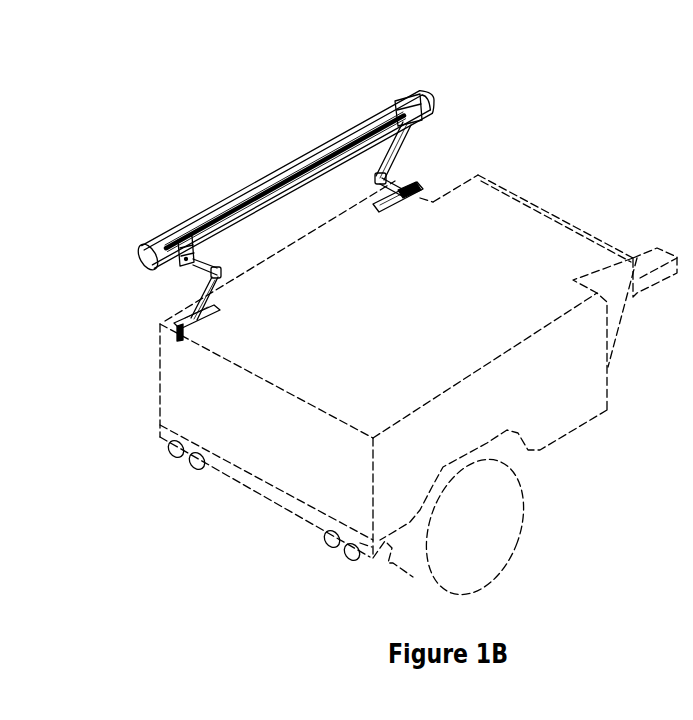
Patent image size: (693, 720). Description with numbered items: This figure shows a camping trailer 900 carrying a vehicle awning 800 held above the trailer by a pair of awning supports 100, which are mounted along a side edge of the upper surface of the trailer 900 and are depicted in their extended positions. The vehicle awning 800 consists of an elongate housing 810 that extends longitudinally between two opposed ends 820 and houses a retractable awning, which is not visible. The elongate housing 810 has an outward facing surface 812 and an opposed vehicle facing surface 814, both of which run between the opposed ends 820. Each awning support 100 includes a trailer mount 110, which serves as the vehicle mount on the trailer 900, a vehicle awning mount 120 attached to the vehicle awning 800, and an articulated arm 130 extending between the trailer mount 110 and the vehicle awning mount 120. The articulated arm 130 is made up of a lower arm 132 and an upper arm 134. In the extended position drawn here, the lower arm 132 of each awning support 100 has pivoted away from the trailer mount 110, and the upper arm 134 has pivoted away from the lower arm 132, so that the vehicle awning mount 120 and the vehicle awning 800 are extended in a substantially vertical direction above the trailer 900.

The awning support 100 is at (489, 128).
The trailer mount 110 is at (162, 322).
The vehicle awning mount 120 is at (192, 247).
The articulated arm 130 is at (177, 281).
The lower arm 132 is at (404, 178).
The upper arm 134 is at (380, 176).
The vehicle awning 800 is at (346, 82).
The elongate housing 810 is at (310, 140).
The outward facing surface 812 is at (204, 203).
The vehicle facing surface 814 is at (395, 117).
The opposed ends 820 is at (415, 89).
The camping trailer 900 is at (413, 321).